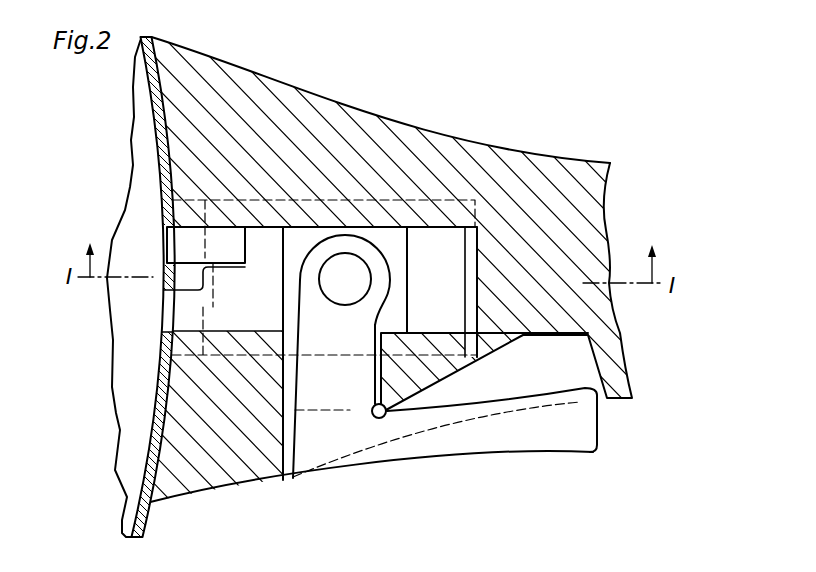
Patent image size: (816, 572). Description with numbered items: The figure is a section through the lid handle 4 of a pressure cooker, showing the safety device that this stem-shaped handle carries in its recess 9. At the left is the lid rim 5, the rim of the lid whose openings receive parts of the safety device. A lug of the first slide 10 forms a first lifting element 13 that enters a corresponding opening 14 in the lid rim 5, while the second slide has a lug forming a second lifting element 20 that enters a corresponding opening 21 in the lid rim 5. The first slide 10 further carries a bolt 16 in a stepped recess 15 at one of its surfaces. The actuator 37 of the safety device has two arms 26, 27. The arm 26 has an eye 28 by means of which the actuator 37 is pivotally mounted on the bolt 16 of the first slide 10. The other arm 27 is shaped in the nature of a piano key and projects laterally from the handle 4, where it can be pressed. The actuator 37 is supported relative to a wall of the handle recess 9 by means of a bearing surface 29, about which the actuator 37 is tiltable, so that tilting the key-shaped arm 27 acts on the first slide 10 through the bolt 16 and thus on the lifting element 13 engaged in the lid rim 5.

The lid handle 4 is at (537, 162).
The lid rim 5 is at (150, 80).
The opening in lid rim 21 is at (168, 225).
The second lifting element 20 is at (173, 250).
The opening in lid rim 14 is at (165, 303).
The first lifting element 13 is at (180, 326).
The first slide 10 is at (236, 309).
The eye 28 is at (338, 240).
The bolt 16 is at (350, 267).
The stepped recess 15 is at (398, 240).
The recess of lid handle 9 is at (480, 297).
The arm of actuator 26 is at (328, 392).
The bearing surface 29 is at (388, 418).
The arm of actuator 27 is at (490, 427).
The actuator 37 is at (534, 433).